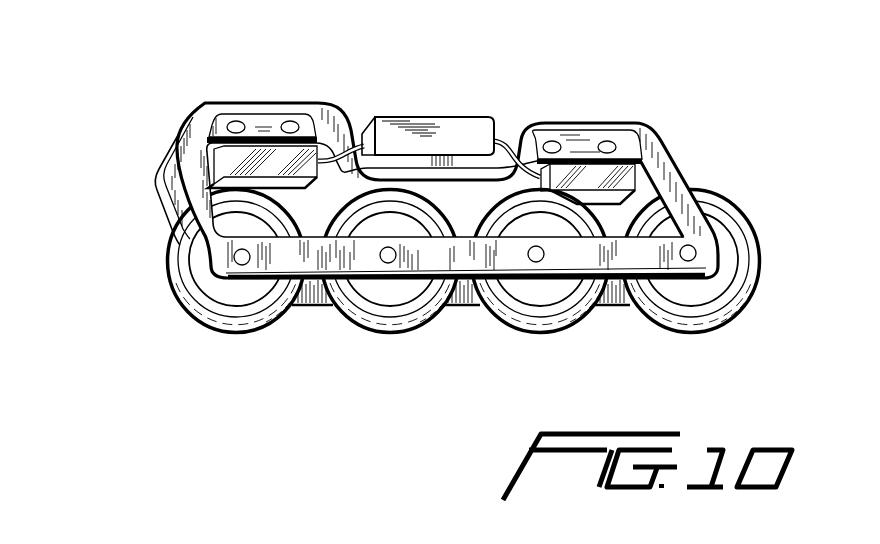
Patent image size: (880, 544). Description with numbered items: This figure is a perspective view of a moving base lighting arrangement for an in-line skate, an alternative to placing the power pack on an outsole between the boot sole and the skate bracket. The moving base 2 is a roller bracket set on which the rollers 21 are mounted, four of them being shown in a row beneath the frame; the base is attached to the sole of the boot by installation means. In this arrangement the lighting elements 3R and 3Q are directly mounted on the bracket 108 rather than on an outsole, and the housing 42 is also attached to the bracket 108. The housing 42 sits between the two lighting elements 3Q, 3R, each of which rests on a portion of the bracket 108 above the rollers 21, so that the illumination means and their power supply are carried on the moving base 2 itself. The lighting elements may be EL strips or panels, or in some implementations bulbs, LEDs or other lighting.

The moving base 2 is at (167, 186).
The rollers 21 is at (198, 306).
The bracket 108 is at (236, 107).
The lighting element 3Q is at (278, 156).
The lighting element 3R is at (623, 178).
The housing 42 is at (463, 115).